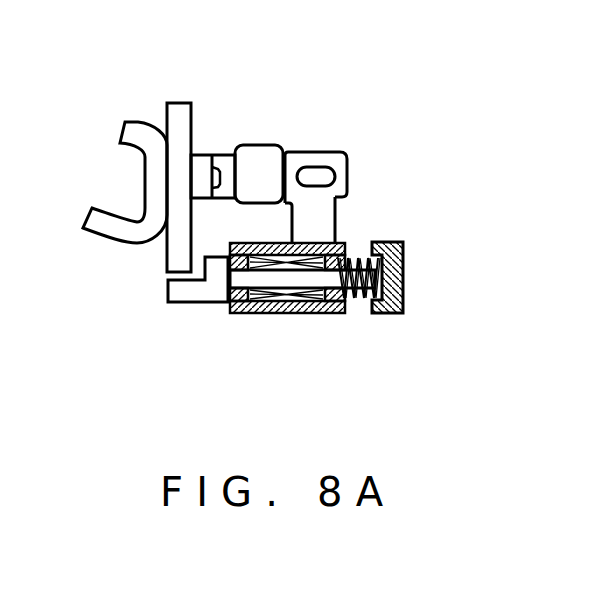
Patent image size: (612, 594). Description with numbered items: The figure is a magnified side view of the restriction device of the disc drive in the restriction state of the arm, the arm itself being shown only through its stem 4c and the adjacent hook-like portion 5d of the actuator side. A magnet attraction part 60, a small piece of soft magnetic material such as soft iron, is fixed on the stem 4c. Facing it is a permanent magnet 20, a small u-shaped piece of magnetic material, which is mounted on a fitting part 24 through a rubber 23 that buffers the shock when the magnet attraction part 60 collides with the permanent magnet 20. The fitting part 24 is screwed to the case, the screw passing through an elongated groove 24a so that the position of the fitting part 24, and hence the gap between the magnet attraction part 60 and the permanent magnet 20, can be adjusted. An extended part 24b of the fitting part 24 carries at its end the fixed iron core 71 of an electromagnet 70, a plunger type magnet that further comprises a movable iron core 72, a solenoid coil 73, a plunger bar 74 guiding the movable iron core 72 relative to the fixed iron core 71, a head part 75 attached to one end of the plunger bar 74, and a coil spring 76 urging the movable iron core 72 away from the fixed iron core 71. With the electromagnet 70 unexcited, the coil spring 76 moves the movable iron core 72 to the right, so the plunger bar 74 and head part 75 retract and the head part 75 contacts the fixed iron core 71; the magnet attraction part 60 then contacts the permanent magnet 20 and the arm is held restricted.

The stem 4c is at (170, 103).
The hook 5d is at (113, 232).
The permanent magnet 20 is at (223, 158).
The magnet attraction part 60 is at (195, 154).
The rubber 23 is at (276, 144).
The fitting part 24 is at (310, 151).
The elongated groove 24a is at (327, 177).
The extended part 24b is at (336, 222).
The electromagnet 70 is at (330, 301).
The fixed iron core 71 is at (235, 313).
The movable iron core 72 is at (403, 307).
The solenoid coil 73 is at (288, 317).
The plunger bar 74 is at (272, 278).
The head part 75 is at (178, 302).
The coil spring 76 is at (403, 270).